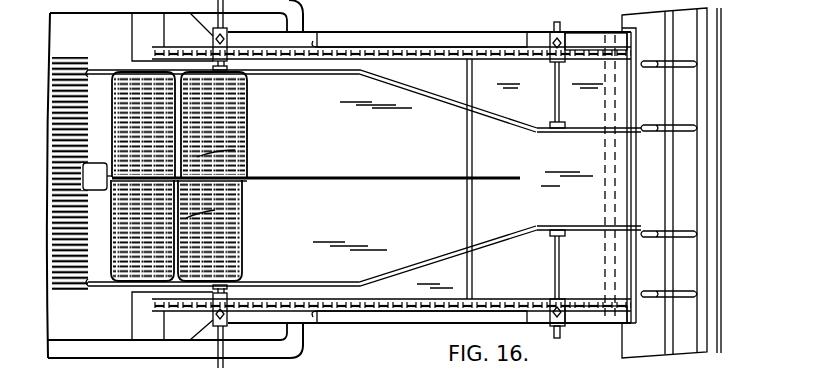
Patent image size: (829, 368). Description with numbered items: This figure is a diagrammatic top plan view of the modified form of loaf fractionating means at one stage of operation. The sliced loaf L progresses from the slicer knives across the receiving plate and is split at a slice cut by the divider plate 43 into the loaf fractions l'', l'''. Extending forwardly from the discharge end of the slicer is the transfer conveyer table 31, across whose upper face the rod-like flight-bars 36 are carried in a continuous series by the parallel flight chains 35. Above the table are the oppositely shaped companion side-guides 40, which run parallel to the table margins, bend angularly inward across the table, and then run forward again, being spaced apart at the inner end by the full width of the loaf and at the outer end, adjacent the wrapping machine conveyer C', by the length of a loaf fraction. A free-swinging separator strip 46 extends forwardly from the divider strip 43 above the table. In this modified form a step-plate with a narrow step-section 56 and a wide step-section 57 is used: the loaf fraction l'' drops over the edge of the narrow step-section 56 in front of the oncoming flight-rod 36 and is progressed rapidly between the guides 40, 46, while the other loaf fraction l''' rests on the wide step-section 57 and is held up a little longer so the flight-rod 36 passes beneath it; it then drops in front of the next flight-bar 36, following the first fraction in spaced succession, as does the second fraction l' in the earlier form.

The sliced loaf L is at (128, 142).
The second loaf fraction l' is at (135, 124).
The loaf fraction l'' is at (180, 246).
The loaf fraction l''' is at (230, 124).
The divider plate 43 is at (108, 188).
The wide step-section 57 is at (235, 150).
The narrow step-section 56 is at (215, 210).
The flight-bar 36 is at (470, 208).
The flight chain 35 is at (440, 48).
The side-guide 40 is at (422, 95).
The separator strip 46 is at (386, 160).
The transfer conveyer table 31 is at (551, 197).
The wrapping machine conveyer C' is at (692, 183).